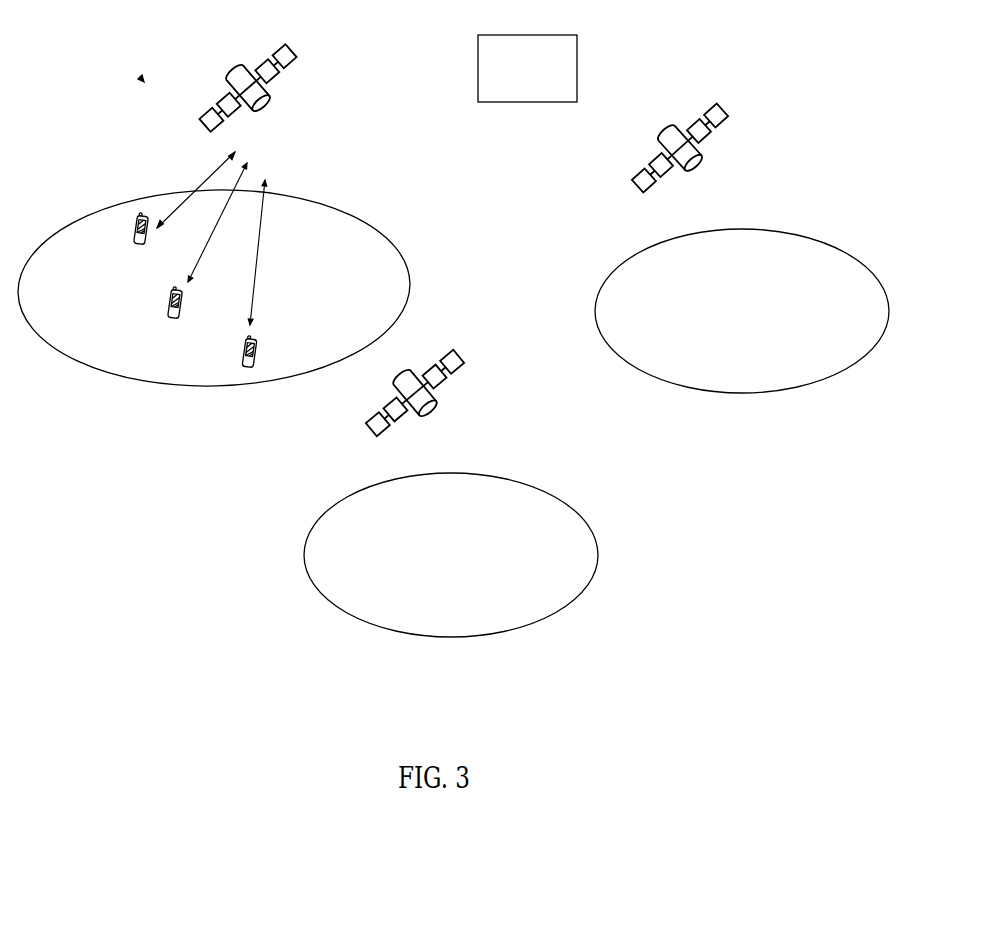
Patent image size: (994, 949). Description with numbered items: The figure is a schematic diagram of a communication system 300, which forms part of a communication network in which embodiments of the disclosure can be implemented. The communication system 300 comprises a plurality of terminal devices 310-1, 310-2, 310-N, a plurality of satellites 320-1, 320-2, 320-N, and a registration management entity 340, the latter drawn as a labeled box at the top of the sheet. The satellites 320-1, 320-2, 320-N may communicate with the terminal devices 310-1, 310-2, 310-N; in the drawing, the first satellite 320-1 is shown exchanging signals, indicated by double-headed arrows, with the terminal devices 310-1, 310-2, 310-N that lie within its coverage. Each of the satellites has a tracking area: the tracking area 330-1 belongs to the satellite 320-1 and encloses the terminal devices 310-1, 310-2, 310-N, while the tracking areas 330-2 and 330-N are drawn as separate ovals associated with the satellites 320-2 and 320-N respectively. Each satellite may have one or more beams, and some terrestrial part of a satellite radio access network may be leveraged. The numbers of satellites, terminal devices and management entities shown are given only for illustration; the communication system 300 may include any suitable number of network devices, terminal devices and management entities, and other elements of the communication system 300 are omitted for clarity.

The communication system 300 is at (143, 80).
The terminal device 310-1 is at (135, 223).
The terminal device 310-2 is at (175, 292).
The terminal device 310-N is at (246, 343).
The satellite 320-1 is at (296, 55).
The satellite 320-2 is at (729, 114).
The satellite 320-N is at (454, 353).
The tracking area 330-1 is at (385, 233).
The tracking area 330-2 is at (872, 270).
The tracking area 330-N is at (581, 513).
The registration management entity 340 is at (518, 97).